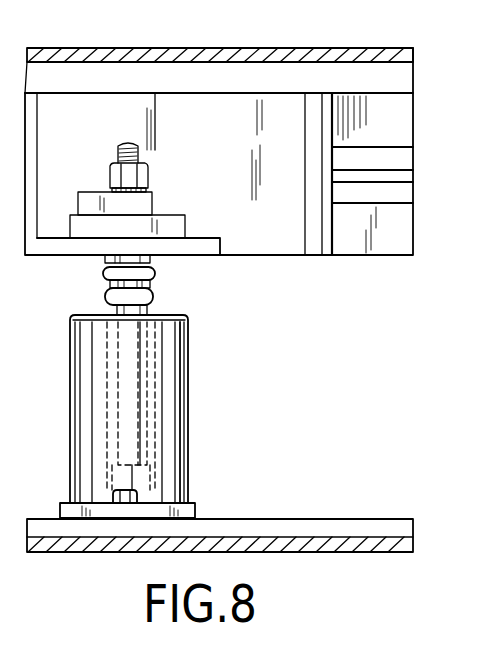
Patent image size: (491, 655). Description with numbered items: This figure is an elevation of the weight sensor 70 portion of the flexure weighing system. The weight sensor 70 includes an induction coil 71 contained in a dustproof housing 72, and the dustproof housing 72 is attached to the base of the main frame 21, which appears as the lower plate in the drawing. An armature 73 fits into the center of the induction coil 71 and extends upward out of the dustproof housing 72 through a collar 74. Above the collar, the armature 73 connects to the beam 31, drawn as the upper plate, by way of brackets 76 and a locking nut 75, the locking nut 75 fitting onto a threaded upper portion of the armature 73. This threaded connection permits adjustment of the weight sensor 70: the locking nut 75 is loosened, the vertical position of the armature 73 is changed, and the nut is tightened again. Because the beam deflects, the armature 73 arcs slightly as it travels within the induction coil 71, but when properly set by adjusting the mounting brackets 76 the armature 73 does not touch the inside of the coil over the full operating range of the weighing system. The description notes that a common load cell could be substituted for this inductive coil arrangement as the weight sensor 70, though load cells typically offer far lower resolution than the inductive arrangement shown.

The main frame 21 is at (336, 553).
The beam 31 is at (285, 49).
The weight sensor 70 is at (333, 348).
The induction coil 71 is at (153, 430).
The dustproof housing 72 is at (188, 379).
The armature 73 is at (189, 333).
The collar 74 is at (154, 297).
The locking nut 75 is at (149, 176).
The brackets 76 is at (199, 241).